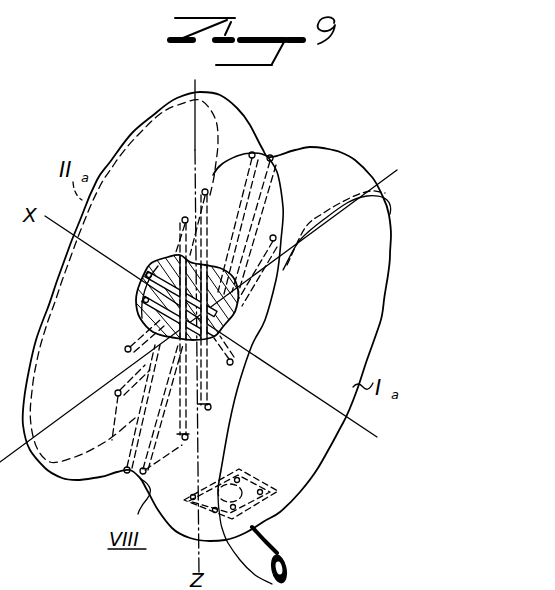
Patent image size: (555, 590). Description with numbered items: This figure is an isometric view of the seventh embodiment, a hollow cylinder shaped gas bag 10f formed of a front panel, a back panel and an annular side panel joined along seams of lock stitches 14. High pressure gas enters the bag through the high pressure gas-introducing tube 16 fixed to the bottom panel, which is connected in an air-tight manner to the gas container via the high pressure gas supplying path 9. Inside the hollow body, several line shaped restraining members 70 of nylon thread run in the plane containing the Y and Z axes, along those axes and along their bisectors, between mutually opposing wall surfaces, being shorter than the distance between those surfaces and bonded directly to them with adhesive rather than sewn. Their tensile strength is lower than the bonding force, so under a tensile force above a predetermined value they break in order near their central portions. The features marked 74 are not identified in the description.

The high pressure gas supplying path 9 is at (273, 553).
The flange 10f is at (388, 222).
The lock stitches 14 is at (165, 263).
The high pressure gas-introducing tube 16 is at (247, 485).
The restraining member 70 is at (195, 200).
The cable 74 is at (288, 207).